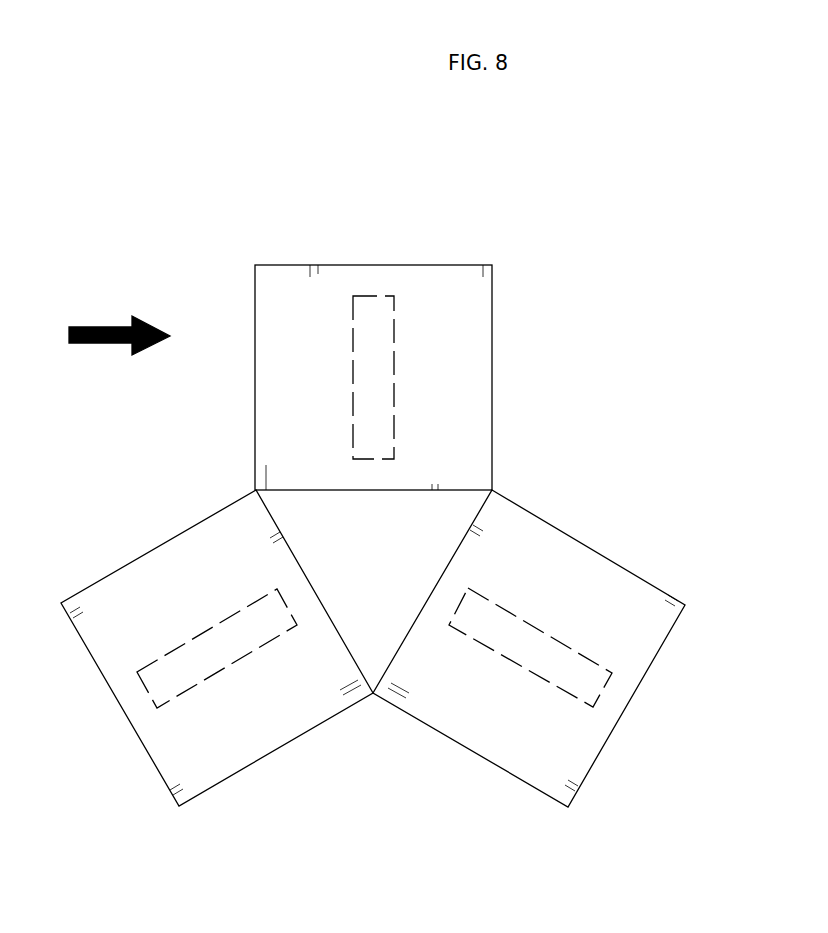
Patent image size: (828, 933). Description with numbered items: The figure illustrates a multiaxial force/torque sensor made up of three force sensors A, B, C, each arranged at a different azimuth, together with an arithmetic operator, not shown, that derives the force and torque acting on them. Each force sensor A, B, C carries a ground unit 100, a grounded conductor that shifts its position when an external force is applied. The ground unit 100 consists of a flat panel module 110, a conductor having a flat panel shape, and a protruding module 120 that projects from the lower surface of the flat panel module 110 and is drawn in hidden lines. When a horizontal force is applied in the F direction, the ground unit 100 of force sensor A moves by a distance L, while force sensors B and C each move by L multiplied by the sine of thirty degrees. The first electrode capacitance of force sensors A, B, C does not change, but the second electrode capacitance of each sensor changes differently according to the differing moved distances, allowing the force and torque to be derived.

The ground unit 100 is at (378, 166).
The flat panel module 110 is at (380, 278).
The protruding module 120 is at (353, 410).
The force sensor A is at (492, 347).
The force sensor B is at (608, 738).
The force sensor C is at (140, 743).
The force direction F is at (129, 335).